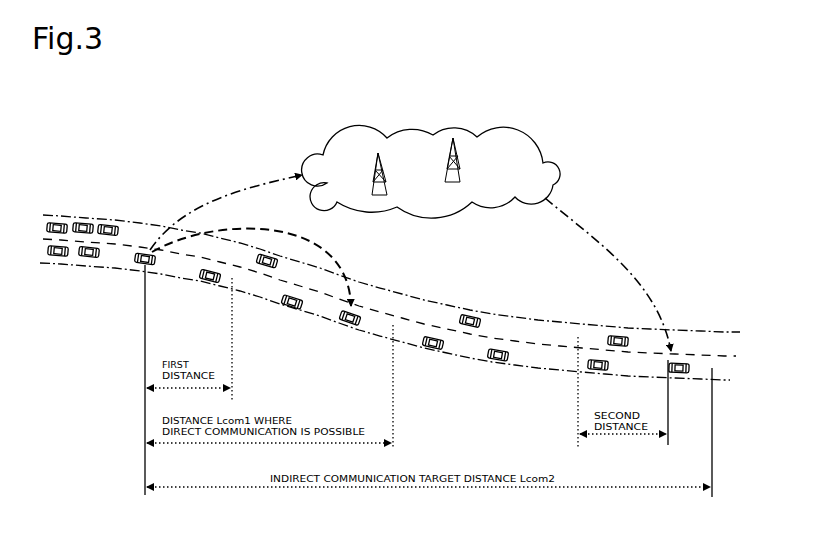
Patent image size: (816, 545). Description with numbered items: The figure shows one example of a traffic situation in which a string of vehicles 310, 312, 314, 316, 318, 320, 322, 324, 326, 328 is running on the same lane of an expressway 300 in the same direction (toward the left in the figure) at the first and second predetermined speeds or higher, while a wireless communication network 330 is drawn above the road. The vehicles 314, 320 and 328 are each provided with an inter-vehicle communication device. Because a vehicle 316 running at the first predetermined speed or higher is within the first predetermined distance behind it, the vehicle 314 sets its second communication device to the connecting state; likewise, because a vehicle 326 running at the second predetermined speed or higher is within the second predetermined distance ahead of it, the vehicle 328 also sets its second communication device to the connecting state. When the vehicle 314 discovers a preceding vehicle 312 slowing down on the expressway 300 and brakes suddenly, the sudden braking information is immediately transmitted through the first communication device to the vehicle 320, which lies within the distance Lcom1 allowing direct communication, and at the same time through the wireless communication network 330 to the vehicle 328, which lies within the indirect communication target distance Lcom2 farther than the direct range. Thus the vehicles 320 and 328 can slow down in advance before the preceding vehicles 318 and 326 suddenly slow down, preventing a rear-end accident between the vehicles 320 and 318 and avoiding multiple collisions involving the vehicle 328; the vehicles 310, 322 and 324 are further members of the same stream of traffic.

The expressway 300 is at (390, 279).
The vehicle 310 is at (50, 269).
The preceding vehicle 312 is at (83, 269).
The vehicle 314 is at (131, 273).
The vehicle 316 is at (205, 292).
The preceding vehicle 318 is at (287, 319).
The vehicle 320 is at (356, 335).
The vehicle 322 is at (428, 359).
The vehicle 324 is at (493, 371).
The preceding vehicle 326 is at (603, 384).
The vehicle 328 is at (685, 385).
The wireless communication network 330 is at (429, 157).